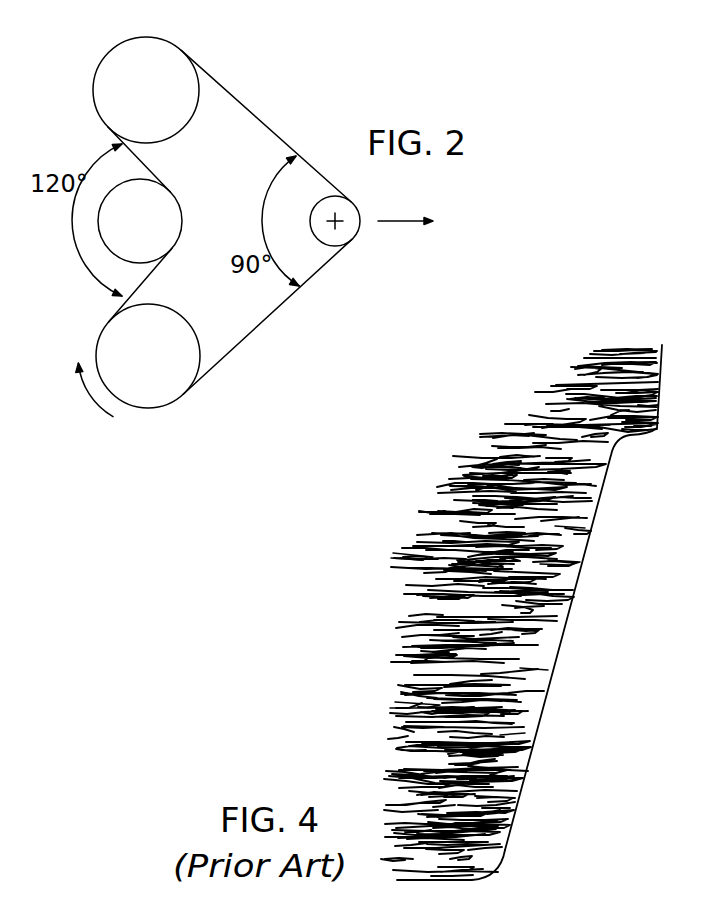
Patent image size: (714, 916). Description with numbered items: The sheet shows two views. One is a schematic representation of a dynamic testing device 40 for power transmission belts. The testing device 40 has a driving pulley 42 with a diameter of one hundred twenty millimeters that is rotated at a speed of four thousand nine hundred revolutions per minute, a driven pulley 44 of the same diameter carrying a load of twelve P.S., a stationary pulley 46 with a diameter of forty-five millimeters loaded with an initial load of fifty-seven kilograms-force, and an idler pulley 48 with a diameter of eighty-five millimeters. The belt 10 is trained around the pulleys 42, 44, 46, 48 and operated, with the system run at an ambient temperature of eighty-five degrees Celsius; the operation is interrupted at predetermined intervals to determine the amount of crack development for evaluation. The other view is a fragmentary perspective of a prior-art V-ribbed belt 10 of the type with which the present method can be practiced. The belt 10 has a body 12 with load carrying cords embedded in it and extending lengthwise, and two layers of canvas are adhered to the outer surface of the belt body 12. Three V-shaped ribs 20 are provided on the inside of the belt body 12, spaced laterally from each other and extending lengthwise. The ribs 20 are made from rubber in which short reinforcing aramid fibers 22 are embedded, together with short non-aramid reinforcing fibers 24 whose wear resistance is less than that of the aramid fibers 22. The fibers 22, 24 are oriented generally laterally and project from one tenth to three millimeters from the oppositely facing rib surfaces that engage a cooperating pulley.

In FIG. 4, the V-ribbed belt 10 is at (496, 612).
In FIG. 4, the belt body 12 is at (576, 614).
In FIG. 4, the V-shaped ribs 20 is at (512, 812).
In FIG. 4, the aramid fibers 22 is at (582, 577).
In FIG. 4, the non-aramid reinforcing fibers 24 is at (586, 532).
In FIG. 2, the dynamic testing device 40 is at (263, 100).
In FIG. 2, the driving pulley 42 is at (162, 393).
In FIG. 2, the driven pulley 44 is at (167, 70).
In FIG. 2, the stationary pulley 46 is at (345, 228).
In FIG. 2, the idler pulley 48 is at (104, 240).